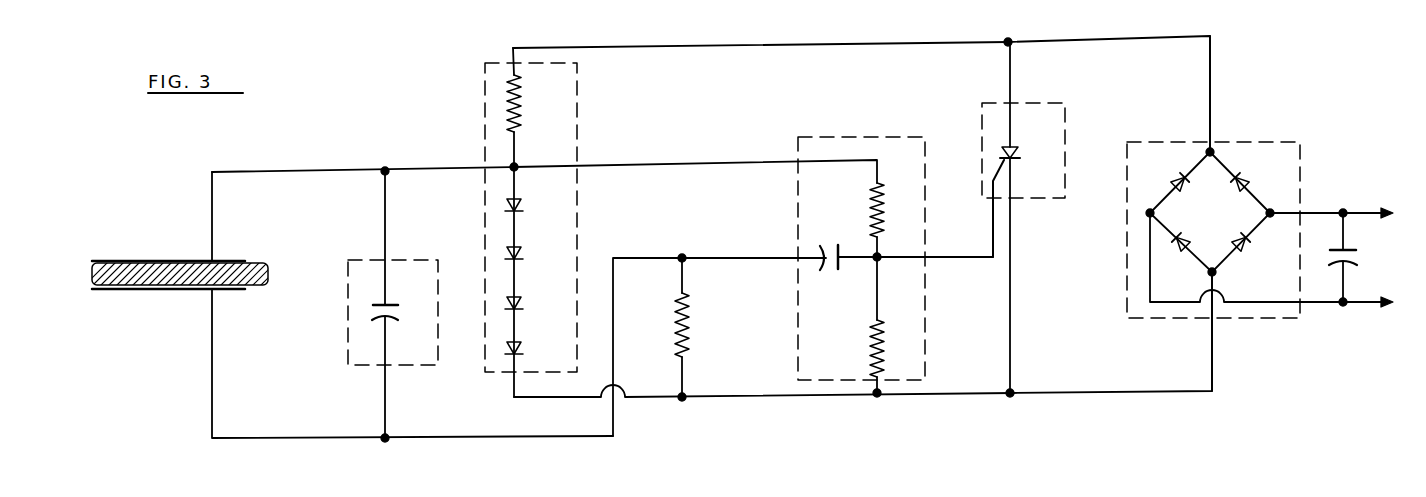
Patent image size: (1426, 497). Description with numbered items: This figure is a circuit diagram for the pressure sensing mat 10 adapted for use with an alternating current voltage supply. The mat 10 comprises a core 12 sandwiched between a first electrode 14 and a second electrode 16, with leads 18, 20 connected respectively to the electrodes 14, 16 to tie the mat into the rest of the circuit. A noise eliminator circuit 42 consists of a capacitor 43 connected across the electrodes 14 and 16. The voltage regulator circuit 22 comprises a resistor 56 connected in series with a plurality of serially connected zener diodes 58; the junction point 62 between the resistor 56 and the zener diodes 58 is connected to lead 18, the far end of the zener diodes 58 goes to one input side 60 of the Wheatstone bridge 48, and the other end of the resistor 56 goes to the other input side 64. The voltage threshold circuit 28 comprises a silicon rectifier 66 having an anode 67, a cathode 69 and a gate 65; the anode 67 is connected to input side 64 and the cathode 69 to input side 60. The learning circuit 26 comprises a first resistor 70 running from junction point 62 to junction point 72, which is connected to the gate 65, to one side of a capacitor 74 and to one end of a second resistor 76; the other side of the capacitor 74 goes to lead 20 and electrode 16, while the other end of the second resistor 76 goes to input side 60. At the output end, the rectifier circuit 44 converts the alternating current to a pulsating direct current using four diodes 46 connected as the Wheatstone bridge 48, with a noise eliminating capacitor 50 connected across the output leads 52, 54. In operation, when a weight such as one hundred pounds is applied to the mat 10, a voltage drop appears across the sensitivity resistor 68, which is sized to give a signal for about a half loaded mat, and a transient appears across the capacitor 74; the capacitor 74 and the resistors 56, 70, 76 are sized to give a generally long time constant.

The pressure sensing mat 10 is at (150, 300).
The core 12 is at (268, 273).
The first electrode 14 is at (130, 260).
The second electrode 16 is at (232, 291).
The lead 18 is at (291, 173).
The lead 20 is at (213, 336).
The voltage regulator circuit 22 is at (485, 108).
The learning circuit 26 is at (845, 135).
The voltage threshold circuit 28 is at (1066, 131).
The noise eliminator circuit 42 is at (348, 349).
The capacitor 43 is at (398, 315).
The rectifier circuit 44 is at (1300, 161).
The diodes 46 is at (1175, 178).
The Wheatstone bridge 48 is at (1224, 226).
The noise eliminating capacitor 50 is at (1357, 258).
The output lead 52 is at (1374, 306).
The output lead 54 is at (1364, 206).
The resistor 56 is at (522, 97).
The zener diodes 58 is at (523, 205).
The input side 60 is at (1212, 350).
The junction point 62 is at (516, 165).
The input side 64 is at (1212, 131).
The gate 65 is at (997, 172).
The silicon rectifier 66 is at (1018, 160).
The anode 67 is at (1012, 146).
The sensitivity resistor 68 is at (690, 341).
The cathode 69 is at (1012, 206).
The first resistor 70 is at (883, 206).
The junction point 72 is at (880, 255).
The capacitor 74 is at (832, 244).
The second resistor 76 is at (883, 343).